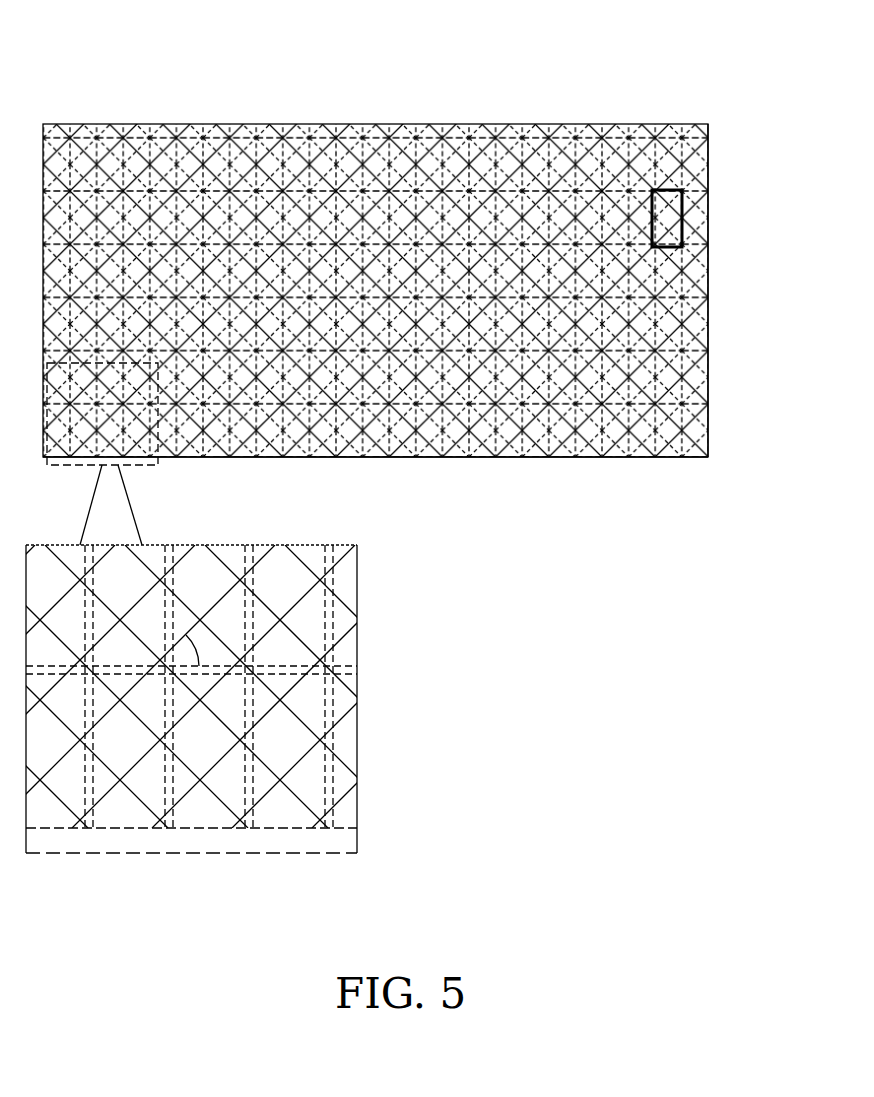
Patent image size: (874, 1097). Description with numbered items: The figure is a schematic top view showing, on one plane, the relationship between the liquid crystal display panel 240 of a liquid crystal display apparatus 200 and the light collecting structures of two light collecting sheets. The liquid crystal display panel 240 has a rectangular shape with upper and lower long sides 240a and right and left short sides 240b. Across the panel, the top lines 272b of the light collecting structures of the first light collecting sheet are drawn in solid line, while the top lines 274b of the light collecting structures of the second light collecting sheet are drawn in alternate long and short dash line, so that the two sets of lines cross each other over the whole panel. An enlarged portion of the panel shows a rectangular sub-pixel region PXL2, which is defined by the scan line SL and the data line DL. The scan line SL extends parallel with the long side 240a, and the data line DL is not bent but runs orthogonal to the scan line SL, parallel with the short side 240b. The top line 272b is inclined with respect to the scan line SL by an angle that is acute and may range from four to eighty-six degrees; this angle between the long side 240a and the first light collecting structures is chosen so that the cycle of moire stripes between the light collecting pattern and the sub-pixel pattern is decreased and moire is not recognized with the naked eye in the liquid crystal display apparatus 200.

The liquid crystal display apparatus 200 is at (418, 242).
The liquid crystal display panel 240 is at (709, 410).
The long side 240a is at (449, 459).
The short side 240b is at (709, 280).
The sub-pixel region PXL2 is at (684, 195).
The data line DL is at (255, 586).
The scan line SL is at (295, 673).
The top line of first light collecting sheet 272b is at (305, 594).
The top line of second light collecting sheet 274b is at (299, 638).